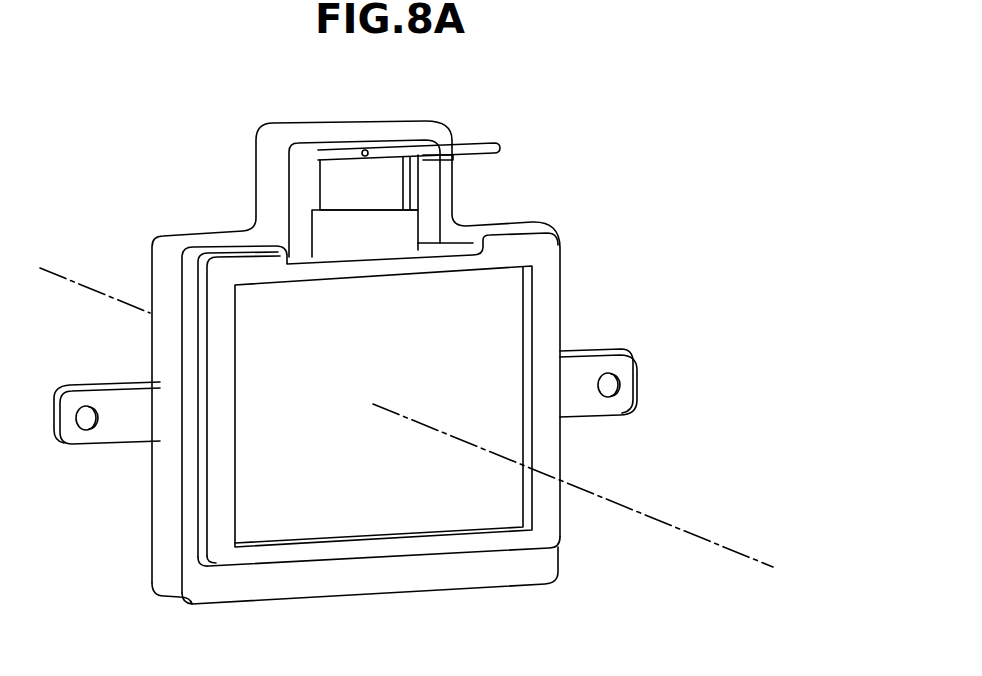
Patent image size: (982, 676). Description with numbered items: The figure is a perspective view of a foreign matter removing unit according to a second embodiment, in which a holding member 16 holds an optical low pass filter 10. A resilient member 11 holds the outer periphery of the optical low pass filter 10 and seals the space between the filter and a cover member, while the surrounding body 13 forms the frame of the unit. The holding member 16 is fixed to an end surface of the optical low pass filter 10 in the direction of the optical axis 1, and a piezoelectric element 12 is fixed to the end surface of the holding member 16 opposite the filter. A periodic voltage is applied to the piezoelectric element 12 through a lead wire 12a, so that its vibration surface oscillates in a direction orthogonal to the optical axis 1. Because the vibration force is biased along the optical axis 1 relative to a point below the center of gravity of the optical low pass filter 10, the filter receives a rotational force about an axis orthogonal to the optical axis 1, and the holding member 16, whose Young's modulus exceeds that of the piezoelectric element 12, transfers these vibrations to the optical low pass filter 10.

The optical axis 1 is at (672, 523).
The optical low pass filter 10 is at (478, 315).
The resilient member 11 is at (545, 443).
The piezoelectric element 12 is at (370, 187).
The lead wire 12a is at (500, 143).
The housing 13 is at (557, 572).
The holding member 16 is at (355, 238).